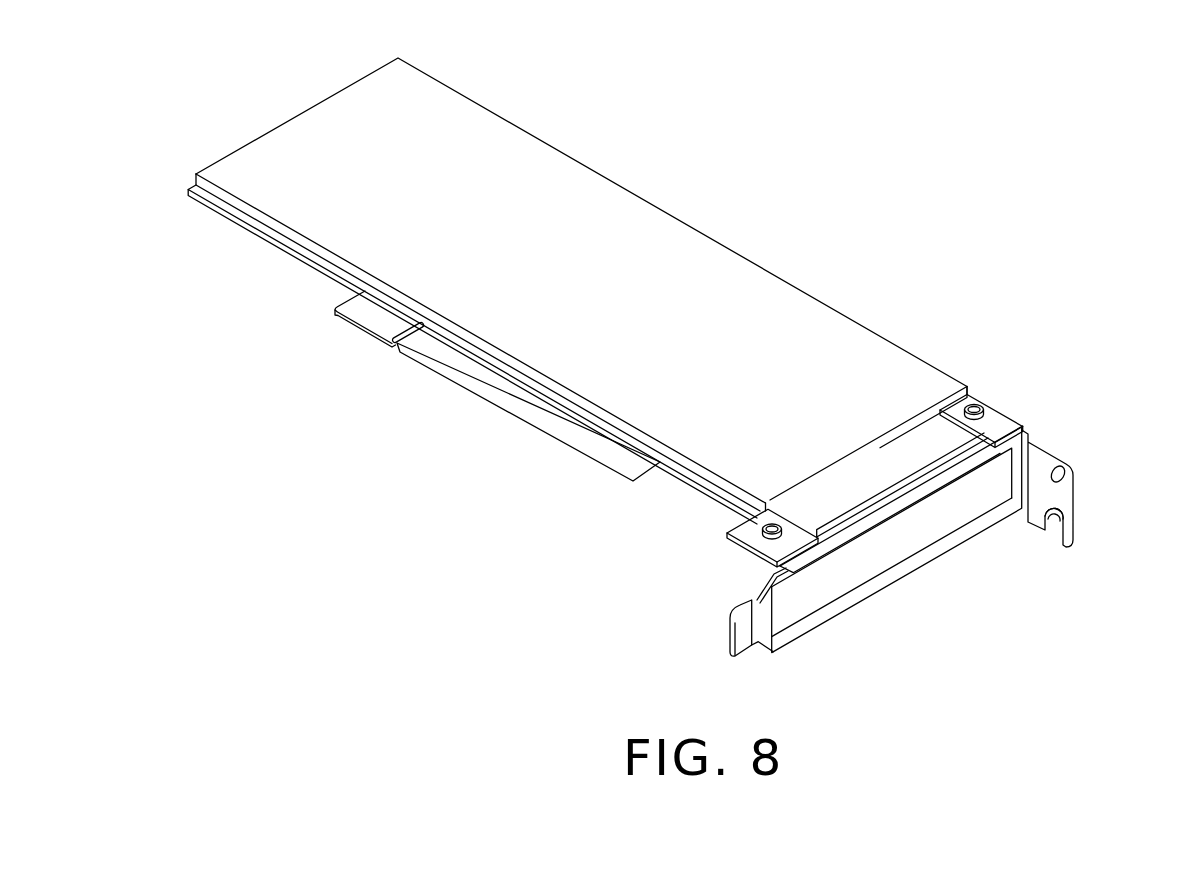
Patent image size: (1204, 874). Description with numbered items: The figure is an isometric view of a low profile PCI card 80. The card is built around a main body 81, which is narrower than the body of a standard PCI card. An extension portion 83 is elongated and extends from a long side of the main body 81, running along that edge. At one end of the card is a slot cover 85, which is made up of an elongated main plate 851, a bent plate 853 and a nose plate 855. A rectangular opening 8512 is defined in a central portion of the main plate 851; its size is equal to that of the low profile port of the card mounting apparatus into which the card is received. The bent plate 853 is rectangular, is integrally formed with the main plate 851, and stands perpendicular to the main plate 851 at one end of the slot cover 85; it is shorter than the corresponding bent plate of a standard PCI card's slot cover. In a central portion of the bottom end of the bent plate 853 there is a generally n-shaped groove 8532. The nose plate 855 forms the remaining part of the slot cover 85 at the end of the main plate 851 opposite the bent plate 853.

The low profile PCI card 80 is at (693, 46).
The main body 81 is at (670, 258).
The extension portion 83 is at (508, 385).
The slot cover 85 is at (1040, 636).
The main plate 851 is at (920, 562).
The opening 8512 is at (988, 485).
The bent plate 853 is at (1045, 487).
The groove 8532 is at (1053, 519).
The nose plate 855 is at (745, 625).